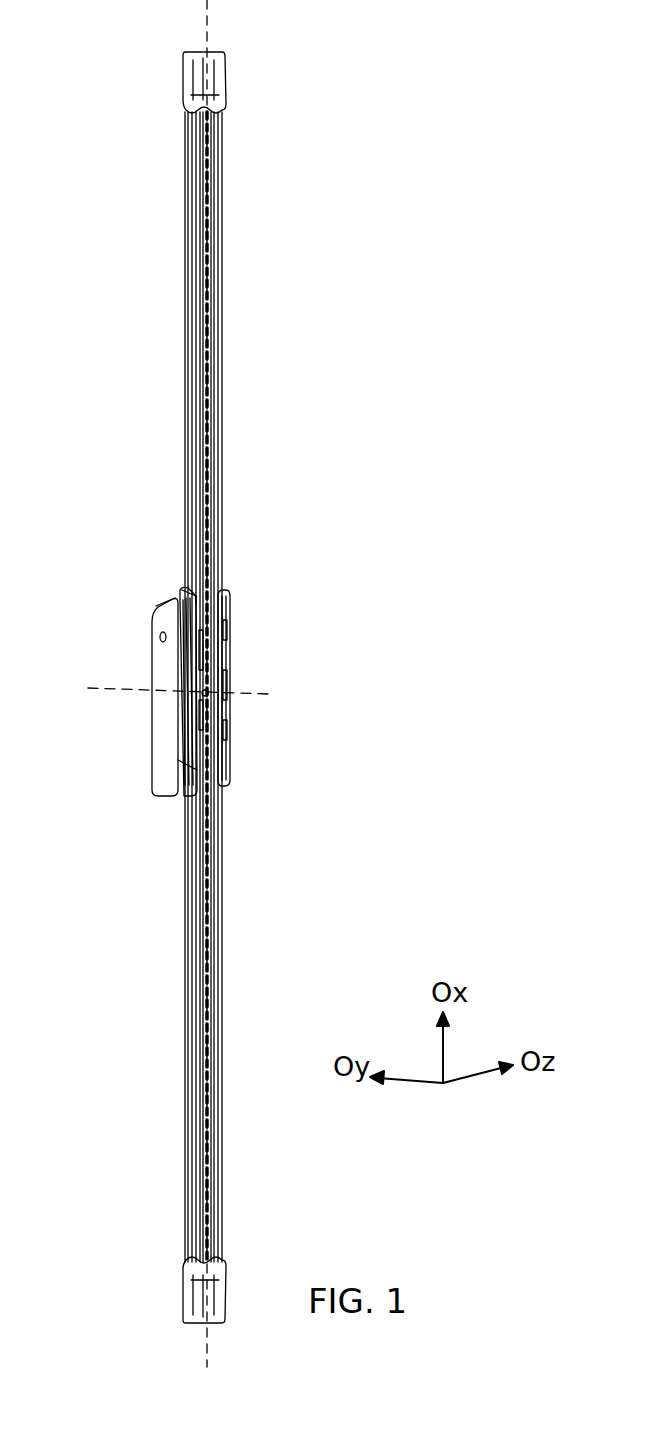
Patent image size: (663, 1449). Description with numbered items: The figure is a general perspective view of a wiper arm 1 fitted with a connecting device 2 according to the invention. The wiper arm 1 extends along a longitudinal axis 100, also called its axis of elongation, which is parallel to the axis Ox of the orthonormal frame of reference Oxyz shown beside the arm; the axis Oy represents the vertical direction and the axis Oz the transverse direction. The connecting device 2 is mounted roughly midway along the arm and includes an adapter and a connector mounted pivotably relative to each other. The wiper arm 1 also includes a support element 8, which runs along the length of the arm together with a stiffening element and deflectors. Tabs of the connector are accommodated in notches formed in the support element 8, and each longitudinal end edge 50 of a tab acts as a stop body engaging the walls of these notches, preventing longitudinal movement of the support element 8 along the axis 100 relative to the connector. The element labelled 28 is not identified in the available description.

The wiper arm 1 is at (179, 687).
The connecting device 2 is at (140, 632).
The support element 8 is at (212, 822).
The guide element of connector 28 is at (238, 660).
The longitudinal end edge 50 is at (205, 693).
The longitudinal axis 100 is at (207, 40).